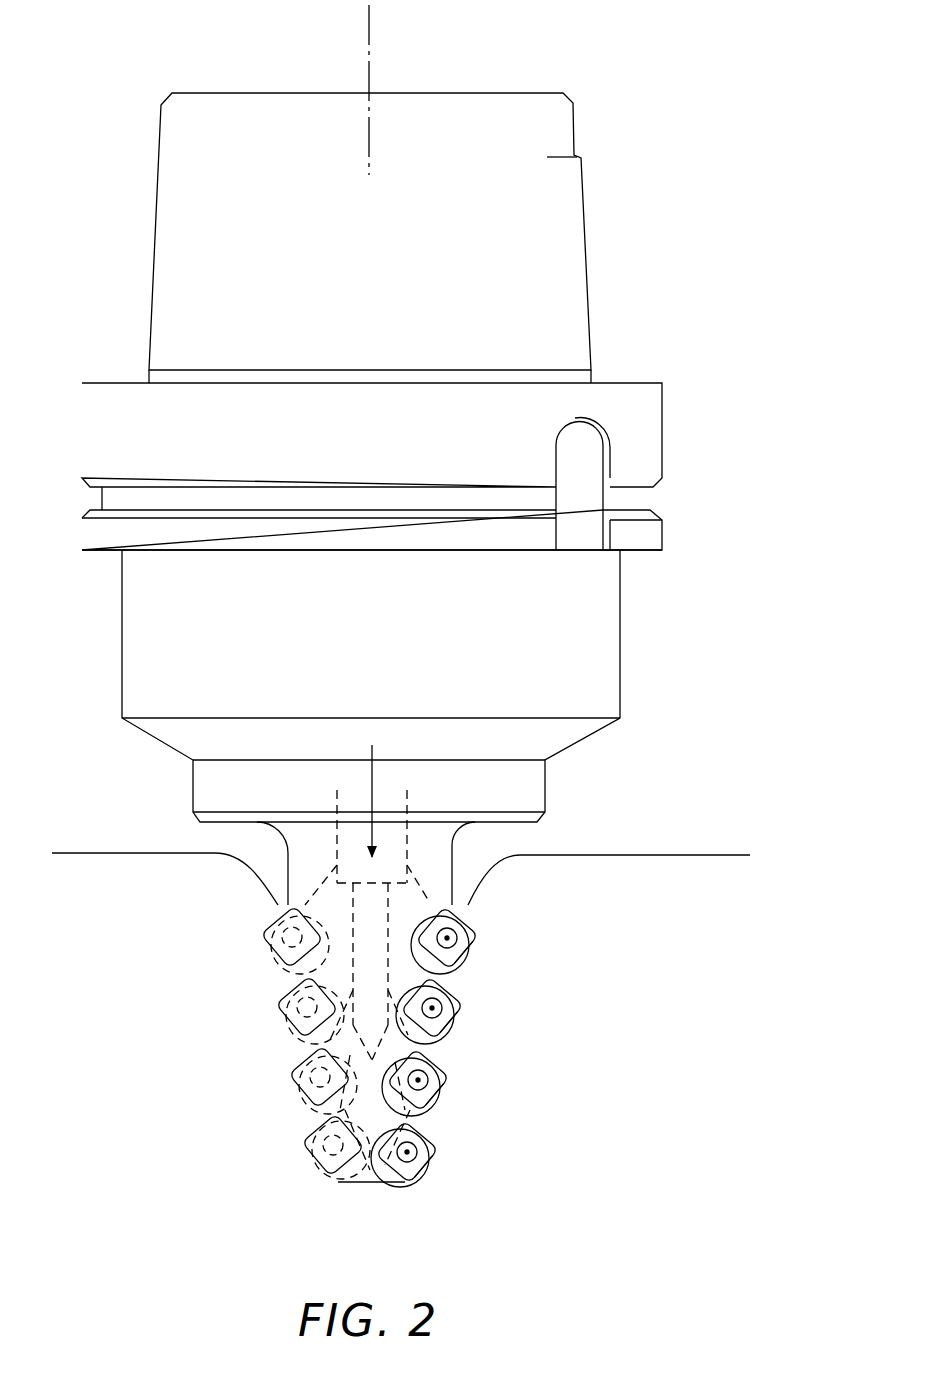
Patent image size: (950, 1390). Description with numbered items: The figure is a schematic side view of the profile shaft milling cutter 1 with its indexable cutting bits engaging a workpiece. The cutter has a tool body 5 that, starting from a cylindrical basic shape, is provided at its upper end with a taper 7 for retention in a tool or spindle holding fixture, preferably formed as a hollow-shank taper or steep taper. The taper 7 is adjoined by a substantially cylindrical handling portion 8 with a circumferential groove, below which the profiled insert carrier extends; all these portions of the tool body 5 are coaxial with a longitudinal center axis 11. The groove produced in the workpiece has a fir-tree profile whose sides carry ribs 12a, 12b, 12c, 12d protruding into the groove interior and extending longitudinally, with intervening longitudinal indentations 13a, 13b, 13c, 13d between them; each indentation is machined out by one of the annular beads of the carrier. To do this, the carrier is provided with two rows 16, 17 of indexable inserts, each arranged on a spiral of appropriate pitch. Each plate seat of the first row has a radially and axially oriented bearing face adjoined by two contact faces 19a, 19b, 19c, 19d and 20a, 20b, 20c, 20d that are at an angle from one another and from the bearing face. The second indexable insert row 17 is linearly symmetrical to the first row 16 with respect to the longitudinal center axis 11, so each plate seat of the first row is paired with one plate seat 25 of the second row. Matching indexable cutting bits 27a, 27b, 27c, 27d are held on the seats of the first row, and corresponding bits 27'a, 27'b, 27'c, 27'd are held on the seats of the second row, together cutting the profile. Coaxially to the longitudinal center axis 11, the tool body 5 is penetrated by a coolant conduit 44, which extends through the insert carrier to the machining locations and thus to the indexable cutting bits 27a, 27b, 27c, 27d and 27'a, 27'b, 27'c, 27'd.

The profile shaft milling cutter 1 is at (735, 590).
The tool body 5 is at (570, 650).
The taper 7 is at (628, 232).
The handling portion 8 is at (634, 447).
The longitudinal center axis 11 is at (369, 60).
The rib 12a is at (488, 935).
The rib 12b is at (458, 977).
The rib 12c is at (445, 1052).
The rib 12d is at (435, 1120).
The indentation 13a is at (458, 955).
The indentation 13b is at (478, 1005).
The indentation 13c is at (462, 1080).
The indentation 13d is at (447, 1155).
The indexable insert row 16 is at (418, 1190).
The indexable insert row 17 is at (330, 1190).
The contact face 19a is at (470, 913).
The contact face 19b is at (462, 1000).
The contact face 19c is at (450, 1076).
The contact face 19d is at (440, 1147).
The contact face 20a is at (458, 972).
The contact face 20b is at (458, 1041).
The contact face 20c is at (443, 1115).
The contact face 20d is at (375, 1182).
The plate seat 25 is at (270, 955).
The indexable cutting bit 27a is at (462, 944).
The indexable cutting bit 27b is at (456, 1016).
The indexable cutting bit 27c is at (440, 1093).
The indexable cutting bit 27d is at (440, 1170).
The indexable cutting bit 27'a is at (244, 937).
The indexable cutting bit 27'b is at (262, 1010).
The indexable cutting bit 27'c is at (273, 1080).
The indexable cutting bit 27'd is at (287, 1146).
The coolant conduit 44 is at (388, 792).